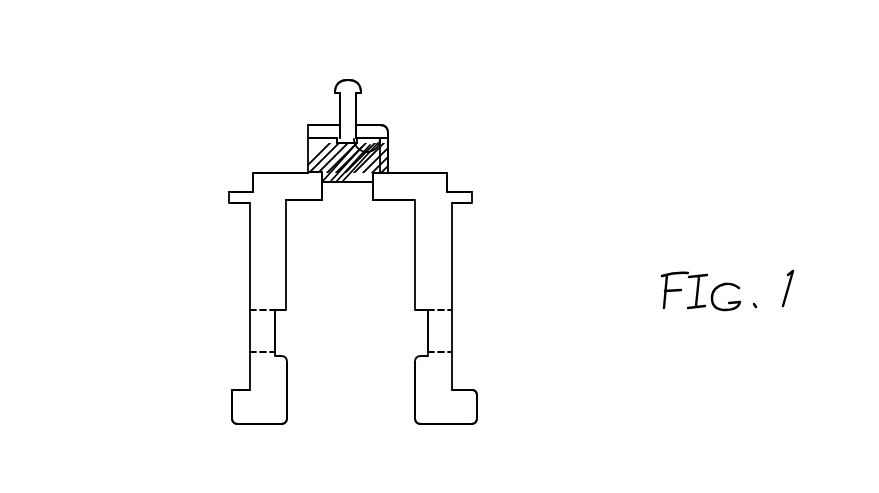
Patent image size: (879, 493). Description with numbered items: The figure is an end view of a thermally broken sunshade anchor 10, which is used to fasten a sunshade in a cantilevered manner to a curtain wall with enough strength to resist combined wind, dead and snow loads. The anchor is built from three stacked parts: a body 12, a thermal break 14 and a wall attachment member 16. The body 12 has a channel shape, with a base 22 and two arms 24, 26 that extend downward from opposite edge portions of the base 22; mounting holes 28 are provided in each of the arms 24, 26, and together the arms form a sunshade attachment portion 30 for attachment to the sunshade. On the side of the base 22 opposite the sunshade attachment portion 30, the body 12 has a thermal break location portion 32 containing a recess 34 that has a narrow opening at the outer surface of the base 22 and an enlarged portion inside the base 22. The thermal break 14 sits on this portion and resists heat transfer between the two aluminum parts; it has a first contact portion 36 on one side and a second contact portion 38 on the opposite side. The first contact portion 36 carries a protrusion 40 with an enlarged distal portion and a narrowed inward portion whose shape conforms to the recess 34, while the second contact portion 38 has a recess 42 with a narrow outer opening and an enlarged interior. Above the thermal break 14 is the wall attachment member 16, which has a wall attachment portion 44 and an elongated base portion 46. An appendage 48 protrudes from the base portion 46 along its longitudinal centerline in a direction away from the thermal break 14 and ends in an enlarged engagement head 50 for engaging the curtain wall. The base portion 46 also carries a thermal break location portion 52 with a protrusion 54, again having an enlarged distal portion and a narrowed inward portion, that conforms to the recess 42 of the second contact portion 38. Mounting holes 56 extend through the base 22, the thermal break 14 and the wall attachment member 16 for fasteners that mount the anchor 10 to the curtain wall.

The thermally broken sunshade anchor 10 is at (161, 90).
The body 12 is at (193, 245).
The thermal break 14 is at (392, 152).
The wall attachment member 16 is at (400, 62).
The base 22 is at (423, 172).
The arm 24 is at (250, 275).
The arm 26 is at (453, 280).
The mounting holes 28 is at (252, 335).
The sunshade attachment portion 30 is at (207, 447).
The thermal break location portion 32 is at (286, 156).
The recess 34 is at (320, 184).
The first contact portion 36 is at (285, 136).
The second contact portion 38 is at (397, 134).
The protrusion 40 is at (378, 184).
The recess 42 is at (392, 163).
The wall attachment portion 44 is at (267, 33).
The elongated base portion 46 is at (340, 112).
The appendage 48 is at (333, 128).
The enlarged engagement head 50 is at (355, 77).
The thermal break location portion 52 is at (396, 119).
The protrusion 54 is at (308, 127).
The mounting holes 56 is at (364, 184).